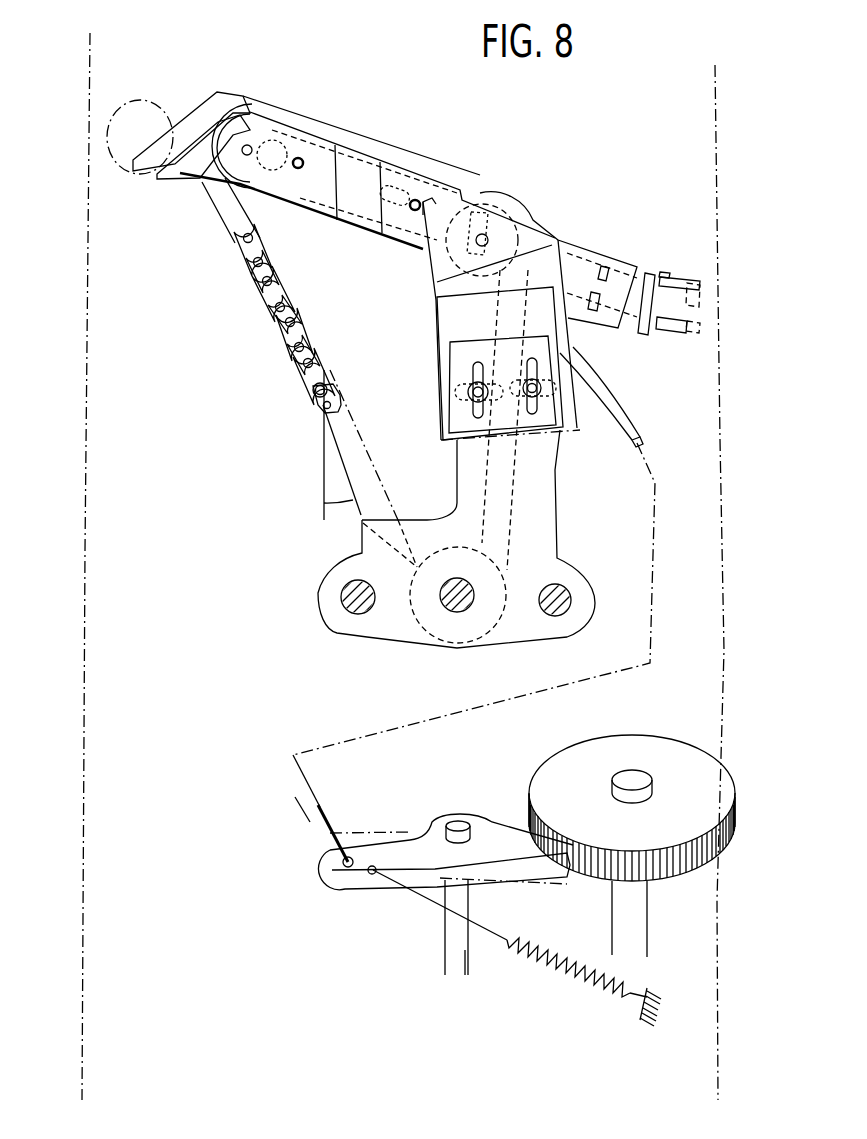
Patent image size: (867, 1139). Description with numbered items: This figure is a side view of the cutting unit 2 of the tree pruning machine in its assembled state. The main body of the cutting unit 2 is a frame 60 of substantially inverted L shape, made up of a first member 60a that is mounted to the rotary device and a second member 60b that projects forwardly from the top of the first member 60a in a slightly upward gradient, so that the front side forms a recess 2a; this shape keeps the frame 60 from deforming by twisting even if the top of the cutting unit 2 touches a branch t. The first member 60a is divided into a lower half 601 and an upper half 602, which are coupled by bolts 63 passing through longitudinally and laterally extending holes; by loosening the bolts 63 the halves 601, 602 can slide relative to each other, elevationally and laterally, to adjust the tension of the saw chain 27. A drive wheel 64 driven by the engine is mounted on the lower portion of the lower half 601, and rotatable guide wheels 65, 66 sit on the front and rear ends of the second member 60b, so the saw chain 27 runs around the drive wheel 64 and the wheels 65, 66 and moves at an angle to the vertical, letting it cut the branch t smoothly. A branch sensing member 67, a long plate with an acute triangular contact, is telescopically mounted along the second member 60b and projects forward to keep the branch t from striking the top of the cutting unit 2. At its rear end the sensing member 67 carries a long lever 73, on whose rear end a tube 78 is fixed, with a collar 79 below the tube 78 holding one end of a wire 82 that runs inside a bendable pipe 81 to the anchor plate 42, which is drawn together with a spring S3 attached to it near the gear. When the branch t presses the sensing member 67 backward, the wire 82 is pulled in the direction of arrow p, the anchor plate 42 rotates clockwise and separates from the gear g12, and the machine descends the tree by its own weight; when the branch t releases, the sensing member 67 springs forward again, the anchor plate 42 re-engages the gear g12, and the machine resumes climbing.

The cutting unit 2 is at (415, 102).
The recess 2a is at (317, 253).
The saw chain 27 is at (237, 247).
The anchor plate 42 is at (332, 873).
The frame 60 is at (147, 365).
The first member 60a is at (213, 410).
The second member 60b is at (370, 227).
The bolts 63 is at (537, 395).
The drive wheel 64 is at (433, 637).
The rotatable wheel 65 is at (279, 134).
The rotatable wheel 66 is at (498, 207).
The branch sensing member 67 is at (190, 122).
The long lever 73 is at (643, 280).
The tube 78 is at (697, 290).
The collar 79 is at (670, 333).
The bendable pipe 81 is at (627, 413).
The wire 82 is at (638, 443).
The lower half 601 is at (467, 423).
The upper half 602 is at (433, 325).
The gear g12 is at (670, 747).
The spring S3 is at (545, 960).
The arrow direction p is at (308, 817).
The branch t is at (123, 170).